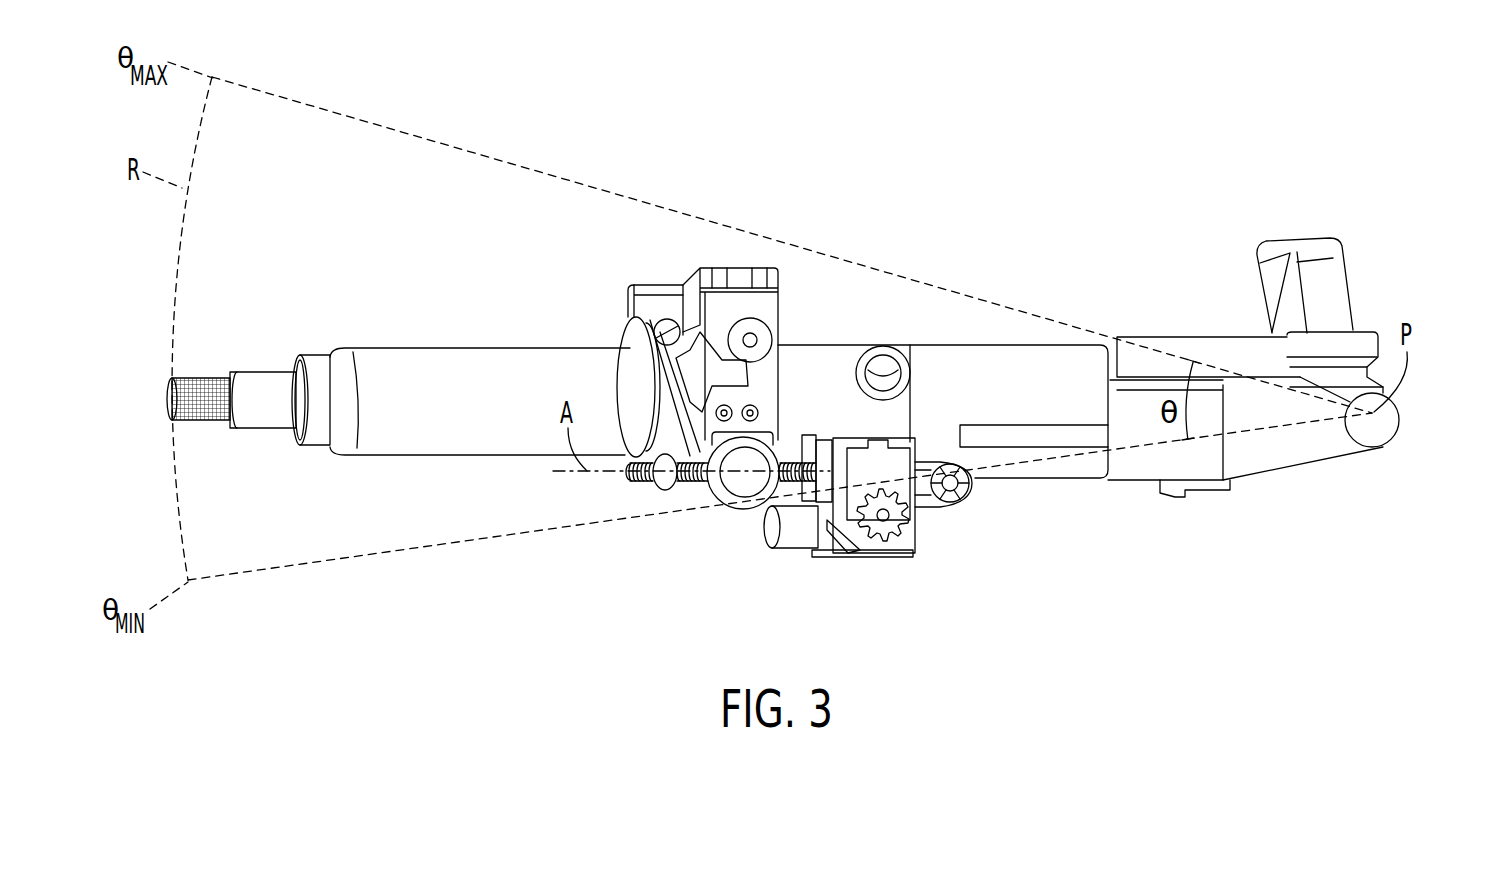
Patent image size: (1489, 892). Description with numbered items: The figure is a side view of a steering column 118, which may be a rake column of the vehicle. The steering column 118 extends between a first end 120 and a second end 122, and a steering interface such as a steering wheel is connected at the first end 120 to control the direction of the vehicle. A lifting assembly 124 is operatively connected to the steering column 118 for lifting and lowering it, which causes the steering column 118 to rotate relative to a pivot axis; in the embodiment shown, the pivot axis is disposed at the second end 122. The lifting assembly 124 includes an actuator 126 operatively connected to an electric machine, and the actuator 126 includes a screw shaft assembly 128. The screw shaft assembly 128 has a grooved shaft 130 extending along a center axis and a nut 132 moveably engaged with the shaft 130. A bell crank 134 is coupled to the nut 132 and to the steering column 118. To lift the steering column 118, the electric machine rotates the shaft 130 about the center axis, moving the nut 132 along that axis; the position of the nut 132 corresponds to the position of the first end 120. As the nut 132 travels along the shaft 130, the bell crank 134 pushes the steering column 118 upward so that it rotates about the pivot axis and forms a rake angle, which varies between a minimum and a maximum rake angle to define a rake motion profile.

The steering column 118 is at (858, 191).
The first end 120 is at (168, 398).
The second end 122 is at (1398, 428).
The lifting assembly 124 is at (738, 558).
The actuator 126 is at (890, 534).
The screw shaft assembly 128 is at (685, 495).
The grooved shaft 130 is at (668, 462).
The nut 132 is at (757, 462).
The bell crank 134 is at (782, 372).